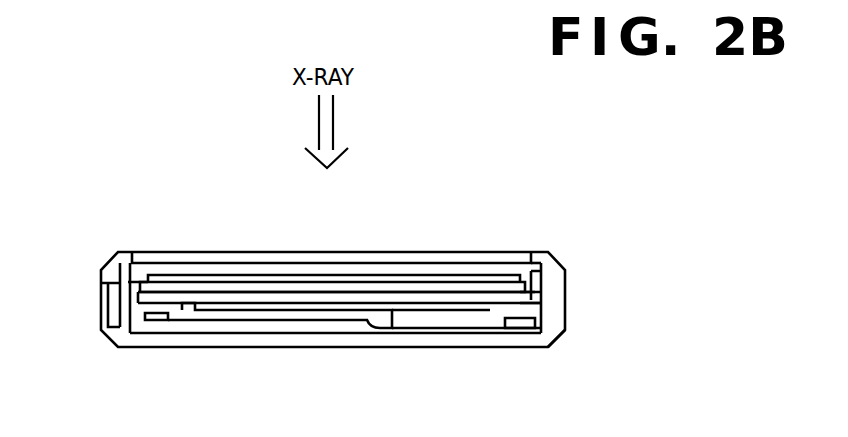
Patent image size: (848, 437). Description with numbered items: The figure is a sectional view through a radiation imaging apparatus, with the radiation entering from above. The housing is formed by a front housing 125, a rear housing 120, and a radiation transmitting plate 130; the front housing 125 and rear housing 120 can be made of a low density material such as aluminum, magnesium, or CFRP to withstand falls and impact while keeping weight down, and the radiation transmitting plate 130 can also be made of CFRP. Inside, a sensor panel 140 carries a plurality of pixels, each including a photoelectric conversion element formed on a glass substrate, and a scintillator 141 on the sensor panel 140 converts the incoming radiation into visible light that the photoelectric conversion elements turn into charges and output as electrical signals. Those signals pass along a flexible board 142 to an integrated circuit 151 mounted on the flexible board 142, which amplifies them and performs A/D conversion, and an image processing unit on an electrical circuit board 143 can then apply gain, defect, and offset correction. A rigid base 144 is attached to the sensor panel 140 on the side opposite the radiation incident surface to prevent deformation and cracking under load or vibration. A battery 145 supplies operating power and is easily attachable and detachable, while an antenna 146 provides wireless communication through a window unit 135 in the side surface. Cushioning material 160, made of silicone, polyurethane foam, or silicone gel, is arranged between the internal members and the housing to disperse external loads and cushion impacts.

The rear housing 120 is at (392, 337).
The front housing 125 is at (553, 258).
The radiation transmitting plate 130 is at (358, 262).
The window unit 135 is at (560, 338).
The sensor panel 140 is at (130, 298).
The scintillator 141 is at (222, 275).
The flexible board 142 is at (134, 322).
The electrical circuit board 143 is at (200, 322).
The base 144 is at (106, 293).
The battery 145 is at (460, 315).
The antenna 146 is at (522, 328).
The integrated circuit 151 is at (160, 322).
The cushioning material 160 is at (268, 283).